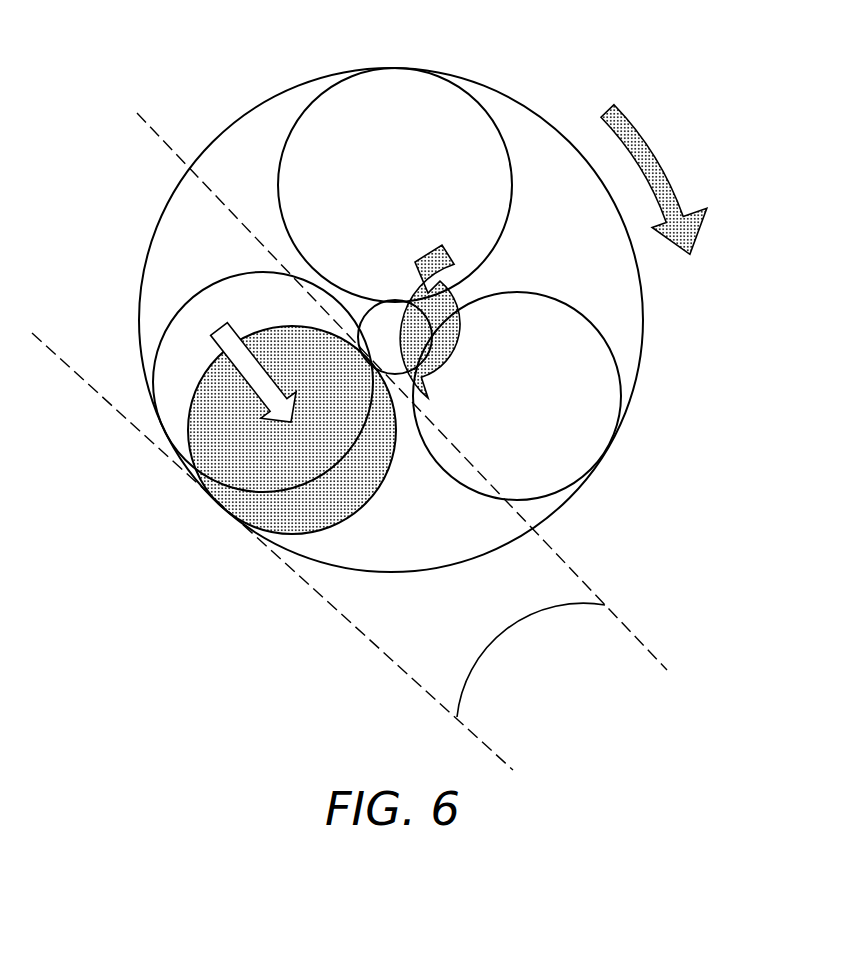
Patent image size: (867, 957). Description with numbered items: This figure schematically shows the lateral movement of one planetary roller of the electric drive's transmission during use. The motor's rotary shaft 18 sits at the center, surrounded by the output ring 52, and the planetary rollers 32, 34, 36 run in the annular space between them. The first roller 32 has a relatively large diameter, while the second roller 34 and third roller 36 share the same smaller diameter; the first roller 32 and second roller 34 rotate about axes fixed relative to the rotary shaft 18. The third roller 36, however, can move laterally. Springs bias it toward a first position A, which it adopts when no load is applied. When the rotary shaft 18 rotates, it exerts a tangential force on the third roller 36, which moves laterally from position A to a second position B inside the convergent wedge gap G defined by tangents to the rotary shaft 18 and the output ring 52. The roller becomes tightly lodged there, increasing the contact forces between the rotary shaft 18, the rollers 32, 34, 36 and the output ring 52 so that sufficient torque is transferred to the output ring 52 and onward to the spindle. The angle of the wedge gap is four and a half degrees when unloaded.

The output ring 52 is at (644, 304).
The first roller 32 is at (393, 78).
The second roller 34 is at (606, 430).
The third roller 36 is at (173, 349).
The rotary shaft 18 is at (396, 310).
The first position A is at (200, 273).
The second position B is at (390, 498).
The wedge gap G is at (545, 560).